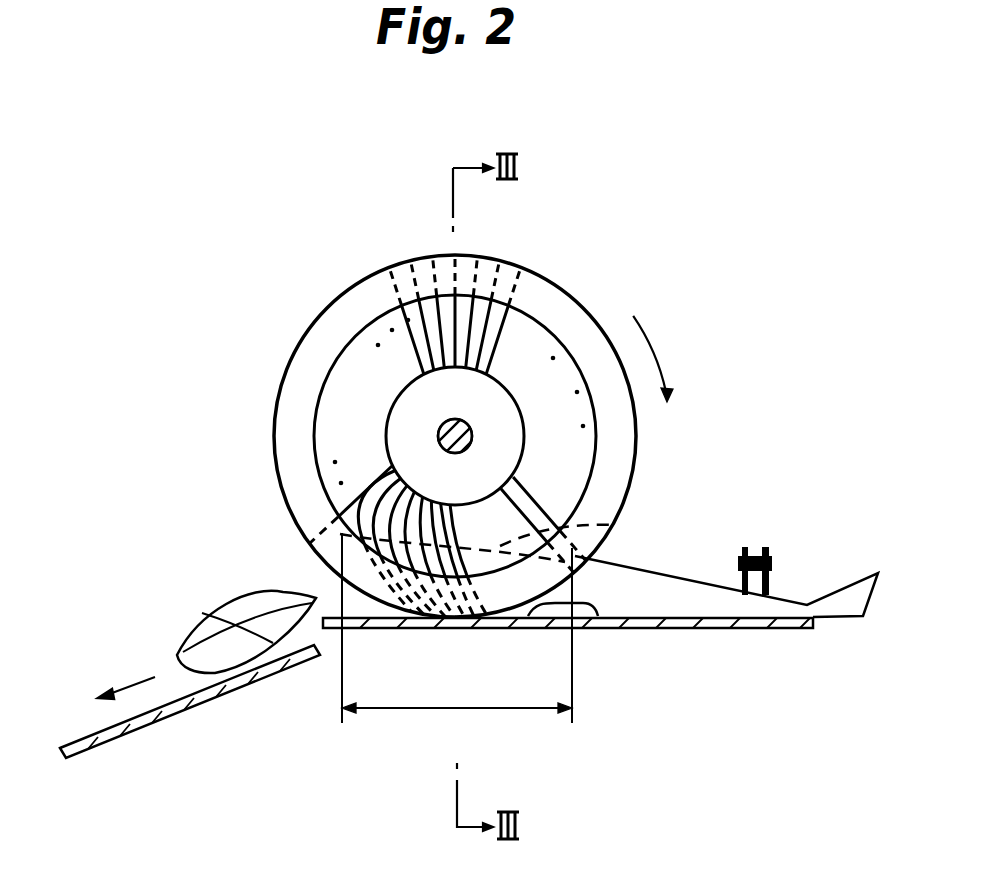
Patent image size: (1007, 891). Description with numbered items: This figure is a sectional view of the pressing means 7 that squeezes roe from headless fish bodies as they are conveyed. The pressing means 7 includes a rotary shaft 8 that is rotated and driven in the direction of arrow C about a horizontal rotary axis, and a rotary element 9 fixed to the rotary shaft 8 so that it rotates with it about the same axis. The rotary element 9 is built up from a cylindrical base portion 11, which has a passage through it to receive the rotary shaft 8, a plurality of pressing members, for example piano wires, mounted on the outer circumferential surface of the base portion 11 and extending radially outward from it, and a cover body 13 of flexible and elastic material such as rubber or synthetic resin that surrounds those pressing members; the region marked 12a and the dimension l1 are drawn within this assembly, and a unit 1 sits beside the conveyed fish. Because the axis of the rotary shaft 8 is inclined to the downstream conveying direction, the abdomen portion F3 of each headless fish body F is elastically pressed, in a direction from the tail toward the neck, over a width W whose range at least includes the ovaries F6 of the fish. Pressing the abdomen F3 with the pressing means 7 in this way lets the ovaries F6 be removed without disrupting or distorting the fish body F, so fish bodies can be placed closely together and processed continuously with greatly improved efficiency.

The sheet feeding unit 1 is at (770, 577).
The pressing means 7 is at (317, 283).
The rotary shaft 8 is at (455, 454).
The rotary element 9 is at (338, 440).
The cylindrical base portion 11 is at (412, 396).
The cover body 13 is at (620, 445).
The contact region 12a is at (614, 528).
The bristle length l1 is at (470, 432).
The direction of arrow C is at (657, 352).
The width W is at (445, 708).
The headless fish body F is at (677, 587).
The abdomen portion F3 is at (603, 630).
The ovaries F6 is at (210, 657).